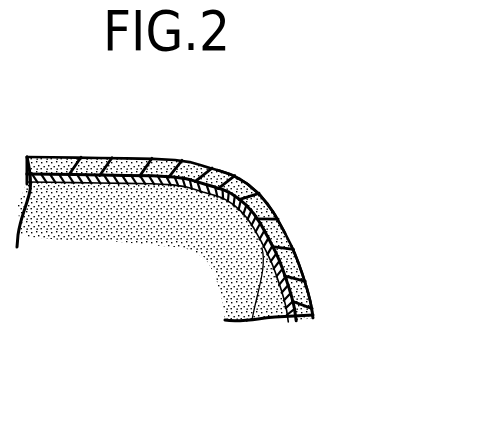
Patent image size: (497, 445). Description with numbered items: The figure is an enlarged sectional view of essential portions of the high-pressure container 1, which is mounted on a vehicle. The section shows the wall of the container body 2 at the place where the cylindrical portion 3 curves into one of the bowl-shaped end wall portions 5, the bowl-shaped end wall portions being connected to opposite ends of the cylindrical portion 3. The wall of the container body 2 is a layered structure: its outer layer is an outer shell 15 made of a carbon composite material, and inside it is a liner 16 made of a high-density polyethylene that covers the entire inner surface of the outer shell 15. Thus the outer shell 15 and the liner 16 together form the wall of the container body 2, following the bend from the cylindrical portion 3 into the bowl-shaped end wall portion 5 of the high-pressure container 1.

The high-pressure container 1 is at (92, 143).
The container body 2 is at (234, 170).
The cylindrical portion 3 is at (150, 158).
The bowl-shaped end wall portion 5 is at (306, 275).
The outer shell 15 is at (278, 207).
The liner 16 is at (252, 322).